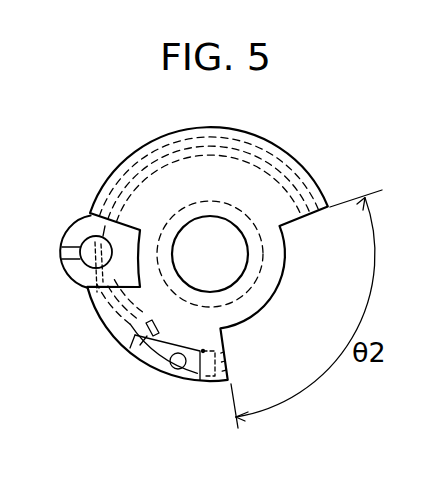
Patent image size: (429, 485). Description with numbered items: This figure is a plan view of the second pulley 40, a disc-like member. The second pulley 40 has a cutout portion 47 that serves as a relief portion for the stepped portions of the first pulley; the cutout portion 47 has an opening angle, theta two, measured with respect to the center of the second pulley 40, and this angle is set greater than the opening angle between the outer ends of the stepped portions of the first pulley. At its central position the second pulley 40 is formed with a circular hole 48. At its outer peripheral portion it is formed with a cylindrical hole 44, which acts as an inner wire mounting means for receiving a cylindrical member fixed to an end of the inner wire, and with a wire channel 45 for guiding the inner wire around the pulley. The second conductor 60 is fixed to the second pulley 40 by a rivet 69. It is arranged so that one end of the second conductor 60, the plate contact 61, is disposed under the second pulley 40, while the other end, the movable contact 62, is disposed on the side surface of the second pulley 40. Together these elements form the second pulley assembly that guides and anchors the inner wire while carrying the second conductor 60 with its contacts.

The second pulley 40 is at (118, 142).
The cylindrical hole 44 is at (82, 248).
The wire channel 45 is at (294, 162).
The cutout portion 47 is at (228, 347).
The circular hole 48 is at (219, 223).
The second conductor 60 is at (152, 365).
The plate contact 61 is at (80, 280).
The movable contact 62 is at (212, 378).
The rivet 69 is at (178, 369).